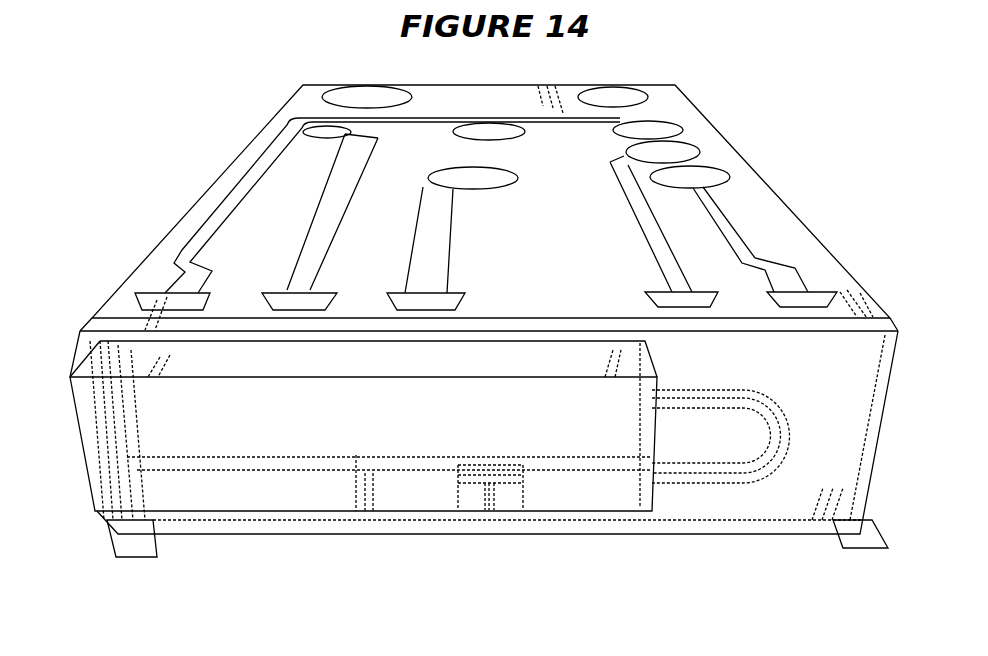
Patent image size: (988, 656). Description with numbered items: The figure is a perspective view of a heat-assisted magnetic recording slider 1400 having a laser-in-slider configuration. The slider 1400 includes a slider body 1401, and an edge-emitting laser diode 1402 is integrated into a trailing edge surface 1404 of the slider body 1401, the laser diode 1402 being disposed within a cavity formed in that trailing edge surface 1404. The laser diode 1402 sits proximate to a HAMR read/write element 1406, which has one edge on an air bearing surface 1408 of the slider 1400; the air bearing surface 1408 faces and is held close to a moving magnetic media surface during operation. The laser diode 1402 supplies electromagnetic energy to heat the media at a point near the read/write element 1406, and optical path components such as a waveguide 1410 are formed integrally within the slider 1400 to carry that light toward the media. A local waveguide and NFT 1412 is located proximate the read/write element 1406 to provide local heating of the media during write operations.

The slider 1400 is at (779, 126).
The slider body 1401 is at (132, 271).
The edge-emitting laser diode 1402 is at (110, 477).
The trailing edge surface 1404 is at (137, 557).
The HAMR read/write element 1406 is at (502, 517).
The air bearing surface 1408 is at (875, 548).
The waveguide 1410 is at (727, 473).
The local waveguide and NFT 1412 is at (487, 519).